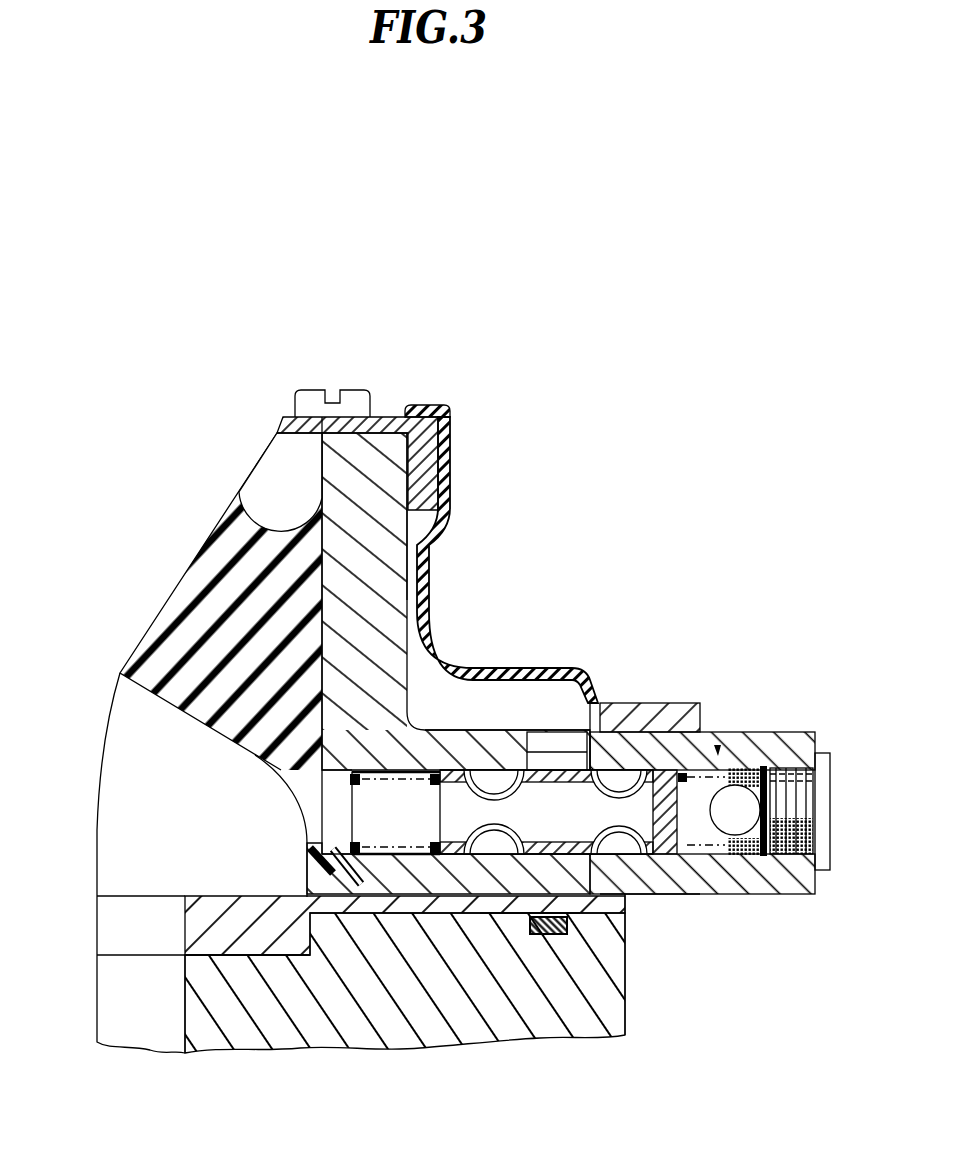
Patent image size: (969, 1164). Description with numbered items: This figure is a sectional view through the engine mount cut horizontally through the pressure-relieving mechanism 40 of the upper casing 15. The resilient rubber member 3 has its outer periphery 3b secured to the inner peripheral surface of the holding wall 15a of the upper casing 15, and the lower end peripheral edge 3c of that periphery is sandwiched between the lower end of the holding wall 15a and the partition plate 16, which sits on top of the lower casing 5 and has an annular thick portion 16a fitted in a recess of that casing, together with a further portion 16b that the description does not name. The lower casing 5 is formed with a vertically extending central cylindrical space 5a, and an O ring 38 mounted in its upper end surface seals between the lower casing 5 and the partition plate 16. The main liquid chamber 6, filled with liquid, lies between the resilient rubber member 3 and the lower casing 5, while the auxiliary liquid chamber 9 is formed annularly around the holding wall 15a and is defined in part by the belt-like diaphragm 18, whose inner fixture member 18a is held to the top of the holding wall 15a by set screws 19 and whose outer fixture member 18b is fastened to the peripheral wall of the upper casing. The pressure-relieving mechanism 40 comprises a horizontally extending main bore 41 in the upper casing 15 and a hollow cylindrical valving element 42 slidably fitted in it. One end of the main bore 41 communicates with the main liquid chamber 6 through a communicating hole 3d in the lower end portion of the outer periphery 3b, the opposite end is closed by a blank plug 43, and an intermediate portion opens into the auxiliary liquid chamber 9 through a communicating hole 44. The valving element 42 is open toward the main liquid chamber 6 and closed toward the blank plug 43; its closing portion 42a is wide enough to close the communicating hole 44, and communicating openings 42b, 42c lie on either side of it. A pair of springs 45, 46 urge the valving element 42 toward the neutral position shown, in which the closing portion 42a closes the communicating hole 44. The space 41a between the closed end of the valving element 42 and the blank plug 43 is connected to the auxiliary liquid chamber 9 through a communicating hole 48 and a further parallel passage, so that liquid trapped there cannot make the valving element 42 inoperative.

The resilient rubber member 3 is at (213, 547).
The outer periphery 3b is at (307, 560).
The lower end peripheral edge 3c is at (312, 883).
The communicating hole 3d is at (314, 787).
The lower casing 5 is at (627, 960).
The central cylindrical space 5a is at (185, 1035).
The main liquid chamber 6 is at (128, 760).
The auxiliary liquid chamber 9 is at (511, 702).
The upper casing 15 is at (406, 662).
The holding wall 15a is at (402, 568).
The partition plate 16 is at (628, 905).
The annular thick portion 16a is at (223, 960).
The plate side edge 16b is at (184, 922).
The diaphragm 18 is at (421, 607).
The fixture member 18a is at (385, 417).
The fixture member 18b is at (656, 703).
The set screws 19 is at (352, 389).
The O ring 38 is at (560, 945).
The pressure-relieving mechanism 40 is at (695, 800).
The main bore 41 is at (717, 860).
The space 41a is at (757, 765).
The valving element 42 is at (450, 870).
The closing portion 42a is at (623, 1035).
The communicating opening 42b is at (540, 955).
The communicating opening 42c is at (660, 865).
The blank plug 43 is at (800, 790).
The communicating hole 44 is at (590, 693).
The spring 45 is at (405, 856).
The spring 46 is at (712, 755).
The communicating hole 48 is at (752, 805).